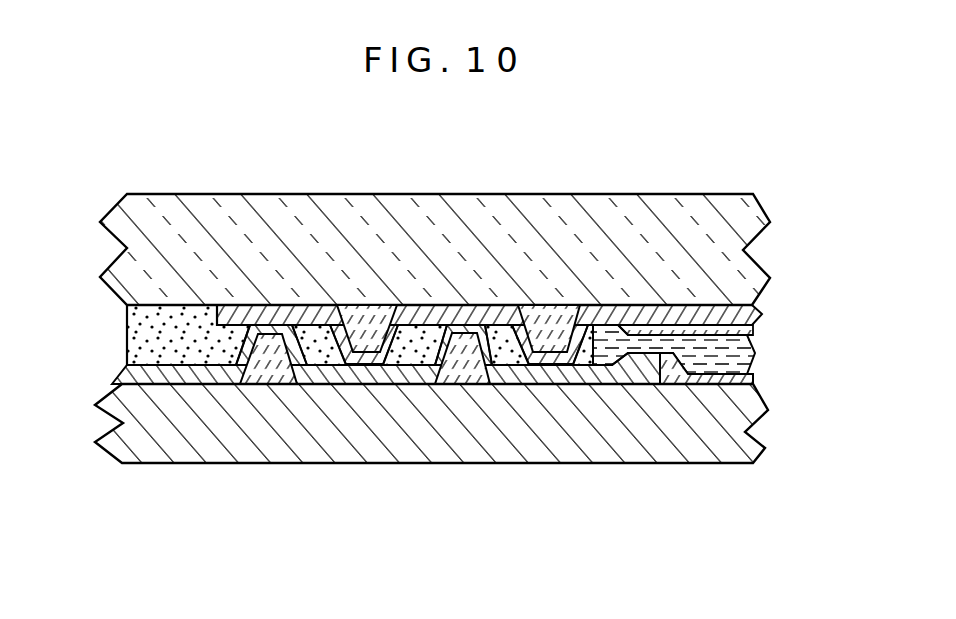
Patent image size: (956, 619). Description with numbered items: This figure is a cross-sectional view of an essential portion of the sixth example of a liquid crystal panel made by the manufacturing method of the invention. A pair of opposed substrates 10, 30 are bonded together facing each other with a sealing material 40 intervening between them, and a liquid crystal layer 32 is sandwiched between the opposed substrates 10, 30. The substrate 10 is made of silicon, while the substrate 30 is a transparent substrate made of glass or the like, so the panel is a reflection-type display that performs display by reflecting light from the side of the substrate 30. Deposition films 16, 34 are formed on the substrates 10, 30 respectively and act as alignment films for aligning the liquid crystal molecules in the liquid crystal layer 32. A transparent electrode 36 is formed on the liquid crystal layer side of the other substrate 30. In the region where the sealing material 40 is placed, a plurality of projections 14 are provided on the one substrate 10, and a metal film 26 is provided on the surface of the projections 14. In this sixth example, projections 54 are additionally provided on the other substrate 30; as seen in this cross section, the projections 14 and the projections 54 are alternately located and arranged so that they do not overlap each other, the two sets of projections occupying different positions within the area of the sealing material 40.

The substrate 10 is at (733, 415).
The projections 14 is at (263, 385).
The deposition film 16 is at (676, 385).
The metal film 26 is at (113, 379).
The substrate 30 is at (745, 222).
The liquid crystal layer 32 is at (735, 356).
The deposition film 34 is at (674, 326).
The transparent electrode 36 is at (752, 316).
The sealing material 40 is at (143, 331).
The projections 54 is at (372, 306).